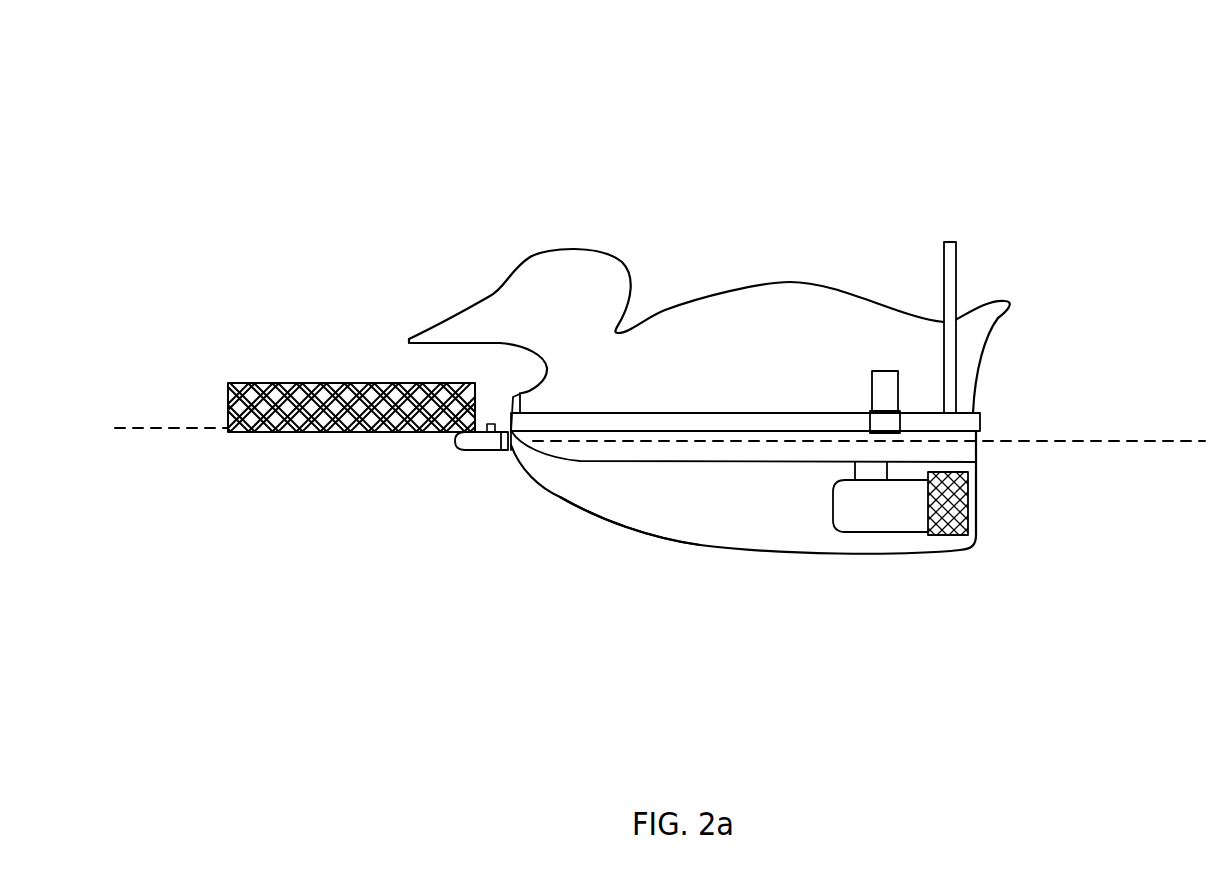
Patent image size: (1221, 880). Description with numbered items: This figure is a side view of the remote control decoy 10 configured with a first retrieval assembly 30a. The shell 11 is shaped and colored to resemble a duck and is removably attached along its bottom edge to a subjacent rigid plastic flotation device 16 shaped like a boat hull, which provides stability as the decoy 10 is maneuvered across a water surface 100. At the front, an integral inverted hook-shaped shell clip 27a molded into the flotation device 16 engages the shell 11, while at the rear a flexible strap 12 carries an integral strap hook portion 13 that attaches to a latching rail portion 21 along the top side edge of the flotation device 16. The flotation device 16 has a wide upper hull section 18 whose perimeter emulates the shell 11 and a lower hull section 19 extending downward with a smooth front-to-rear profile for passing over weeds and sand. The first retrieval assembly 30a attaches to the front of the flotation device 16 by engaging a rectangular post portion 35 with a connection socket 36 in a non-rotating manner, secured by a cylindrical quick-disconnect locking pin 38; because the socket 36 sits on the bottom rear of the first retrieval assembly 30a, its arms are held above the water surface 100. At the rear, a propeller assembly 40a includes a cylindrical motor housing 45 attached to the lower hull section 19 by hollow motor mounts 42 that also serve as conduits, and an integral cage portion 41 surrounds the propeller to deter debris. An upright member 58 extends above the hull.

The remote control decoy 10 is at (1025, 166).
The shell 11 is at (756, 283).
The strap 12 is at (885, 387).
The strap hook portion 13 is at (885, 425).
The flotation device 16 is at (747, 527).
The upper hull section 18 is at (636, 463).
The lower hull section 19 is at (646, 540).
The latching rail portion 21 is at (780, 418).
The shell clip 27a is at (518, 393).
The first retrieval assembly 30a is at (348, 400).
The post portion 35 is at (507, 453).
The connection socket 36 is at (470, 453).
The locking pin 38 is at (491, 423).
The propeller assembly 40a is at (898, 538).
The cage portion 41 is at (958, 532).
The motor mount 42 is at (877, 473).
The motor housing 45 is at (892, 517).
The mast 58 is at (958, 282).
The water surface 100 is at (158, 428).